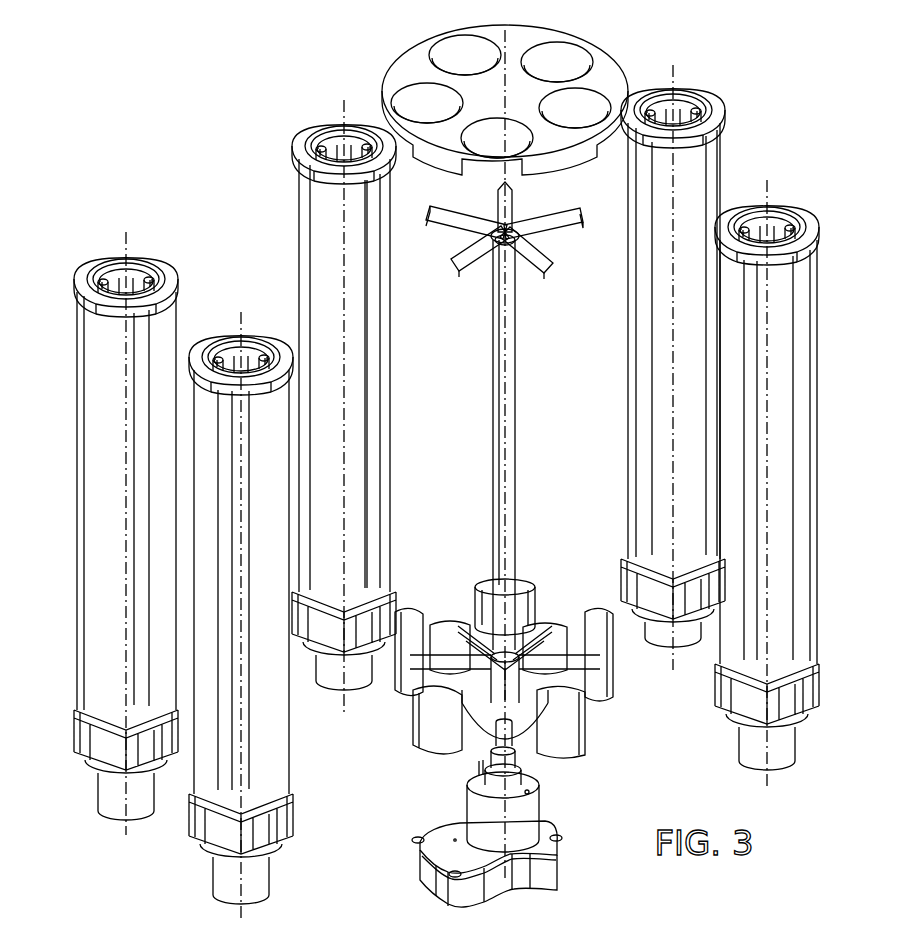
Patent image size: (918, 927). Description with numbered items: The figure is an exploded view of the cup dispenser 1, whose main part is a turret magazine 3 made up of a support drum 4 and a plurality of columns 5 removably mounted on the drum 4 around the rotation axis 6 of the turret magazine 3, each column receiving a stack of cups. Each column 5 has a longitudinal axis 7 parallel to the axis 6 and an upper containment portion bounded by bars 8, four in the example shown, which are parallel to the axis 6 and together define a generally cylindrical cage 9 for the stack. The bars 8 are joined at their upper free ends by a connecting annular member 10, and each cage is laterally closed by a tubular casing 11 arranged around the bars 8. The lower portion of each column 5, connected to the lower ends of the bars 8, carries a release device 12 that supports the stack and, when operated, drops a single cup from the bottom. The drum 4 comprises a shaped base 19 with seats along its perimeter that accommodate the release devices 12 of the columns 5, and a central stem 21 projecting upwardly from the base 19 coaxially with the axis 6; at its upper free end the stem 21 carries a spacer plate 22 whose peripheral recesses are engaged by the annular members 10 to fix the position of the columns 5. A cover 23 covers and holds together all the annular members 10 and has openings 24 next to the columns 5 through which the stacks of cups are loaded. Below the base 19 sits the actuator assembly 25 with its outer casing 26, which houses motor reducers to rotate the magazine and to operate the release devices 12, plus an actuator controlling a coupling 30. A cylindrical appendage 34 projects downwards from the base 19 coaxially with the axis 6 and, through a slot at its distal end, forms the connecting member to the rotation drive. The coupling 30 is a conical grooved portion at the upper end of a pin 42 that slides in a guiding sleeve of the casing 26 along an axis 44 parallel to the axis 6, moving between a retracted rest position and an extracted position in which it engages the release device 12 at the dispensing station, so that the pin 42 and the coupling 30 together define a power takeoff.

The cup dispenser 1 is at (222, 143).
The turret magazine 3 is at (776, 128).
The support drum 4 is at (604, 717).
The column 5 is at (68, 452).
The rotation axis 6 is at (507, 56).
The longitudinal axis 7 is at (124, 250).
The bar 8 is at (112, 268).
The cylindrical cage 9 is at (142, 288).
The connecting annular member 10 is at (82, 287).
The tubular casing 11 is at (356, 437).
The release device 12 is at (104, 742).
The shaped base 19 is at (547, 635).
The central stem 21 is at (513, 515).
The spacer plate 22 is at (527, 248).
The cover 23 is at (414, 60).
The opening 24 is at (466, 58).
The actuator assembly 25 is at (508, 903).
The outer casing 26 is at (440, 885).
The coupling 30 is at (480, 762).
The cylindrical appendage 34 is at (513, 737).
The pin 42 is at (677, 922).
The axis 44 is at (634, 925).